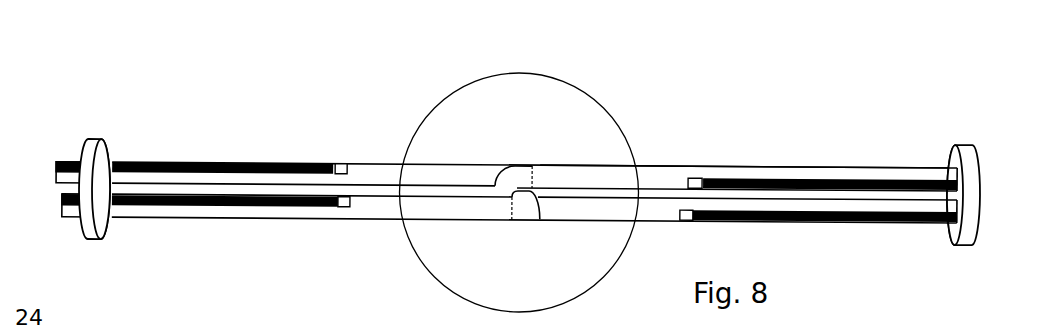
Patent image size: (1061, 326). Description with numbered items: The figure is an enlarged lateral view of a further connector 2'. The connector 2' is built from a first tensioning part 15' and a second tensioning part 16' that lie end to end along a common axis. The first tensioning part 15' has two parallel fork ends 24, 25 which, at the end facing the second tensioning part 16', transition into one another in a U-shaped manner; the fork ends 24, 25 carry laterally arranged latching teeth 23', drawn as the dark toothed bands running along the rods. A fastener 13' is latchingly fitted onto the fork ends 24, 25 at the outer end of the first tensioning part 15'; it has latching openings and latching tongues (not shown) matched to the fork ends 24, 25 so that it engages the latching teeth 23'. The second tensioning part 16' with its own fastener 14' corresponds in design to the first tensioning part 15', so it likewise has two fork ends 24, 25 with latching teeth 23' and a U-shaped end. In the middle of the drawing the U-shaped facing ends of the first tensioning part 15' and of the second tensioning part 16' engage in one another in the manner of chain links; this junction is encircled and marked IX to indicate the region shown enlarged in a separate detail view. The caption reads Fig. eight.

The connector 2' is at (534, 126).
The detail view region IX is at (437, 108).
The fastener 13' is at (84, 150).
The fastener 14' is at (993, 159).
The first tensioning part 15' is at (121, 225).
The second tensioning part 16' is at (748, 126).
The latching teeth 23' is at (534, 180).
The fork end 24 is at (198, 162).
The fork end 25 is at (782, 173).